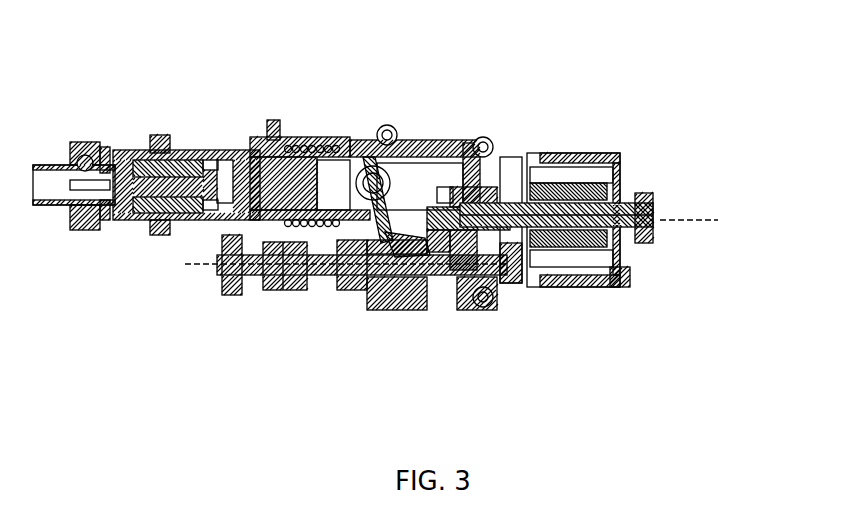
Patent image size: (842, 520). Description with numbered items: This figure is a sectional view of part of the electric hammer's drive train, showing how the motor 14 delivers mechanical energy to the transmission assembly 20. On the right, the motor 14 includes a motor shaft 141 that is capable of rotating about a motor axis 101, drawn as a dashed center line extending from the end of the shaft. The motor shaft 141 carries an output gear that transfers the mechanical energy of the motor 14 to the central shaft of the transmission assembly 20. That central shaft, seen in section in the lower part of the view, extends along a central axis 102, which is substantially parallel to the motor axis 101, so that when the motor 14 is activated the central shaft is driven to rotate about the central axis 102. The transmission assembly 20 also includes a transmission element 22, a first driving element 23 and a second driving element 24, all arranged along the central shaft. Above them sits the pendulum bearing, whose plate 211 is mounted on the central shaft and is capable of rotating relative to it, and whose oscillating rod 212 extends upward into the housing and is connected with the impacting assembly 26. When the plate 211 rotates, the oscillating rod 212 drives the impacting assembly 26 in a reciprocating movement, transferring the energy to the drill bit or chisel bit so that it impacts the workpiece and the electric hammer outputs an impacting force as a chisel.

The motor 14 is at (575, 190).
The motor shaft 141 is at (618, 228).
The motor axis 101 is at (698, 227).
The central axis 102 is at (193, 272).
The transmission assembly 20 is at (316, 300).
The transmission element 22 is at (280, 130).
The first driving element 23 is at (272, 293).
The second driving element 24 is at (337, 293).
The impacting assembly 26 is at (322, 135).
The plate 211 is at (373, 295).
The oscillating rod 212 is at (368, 135).